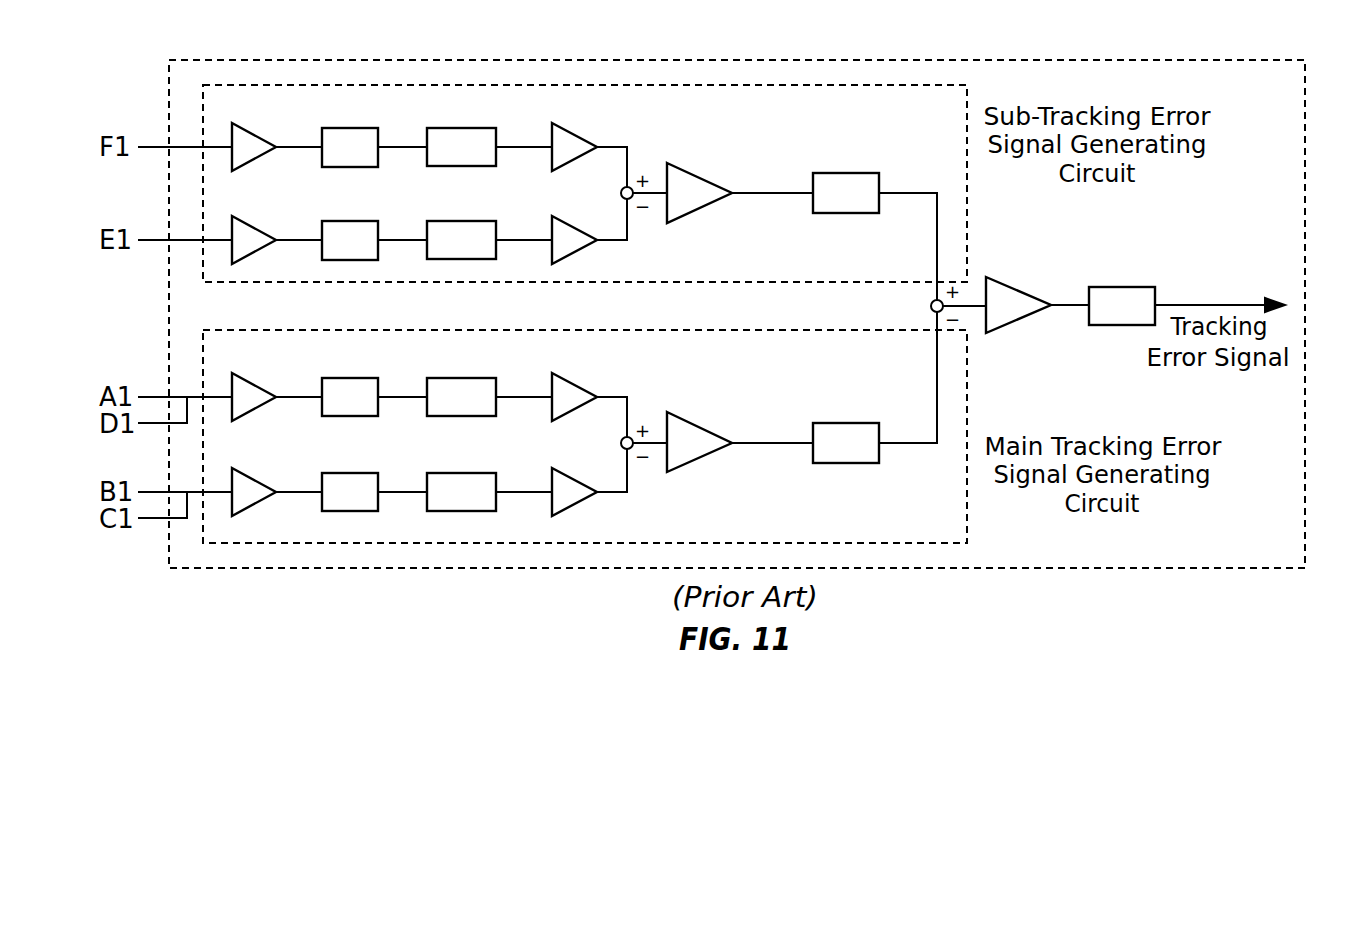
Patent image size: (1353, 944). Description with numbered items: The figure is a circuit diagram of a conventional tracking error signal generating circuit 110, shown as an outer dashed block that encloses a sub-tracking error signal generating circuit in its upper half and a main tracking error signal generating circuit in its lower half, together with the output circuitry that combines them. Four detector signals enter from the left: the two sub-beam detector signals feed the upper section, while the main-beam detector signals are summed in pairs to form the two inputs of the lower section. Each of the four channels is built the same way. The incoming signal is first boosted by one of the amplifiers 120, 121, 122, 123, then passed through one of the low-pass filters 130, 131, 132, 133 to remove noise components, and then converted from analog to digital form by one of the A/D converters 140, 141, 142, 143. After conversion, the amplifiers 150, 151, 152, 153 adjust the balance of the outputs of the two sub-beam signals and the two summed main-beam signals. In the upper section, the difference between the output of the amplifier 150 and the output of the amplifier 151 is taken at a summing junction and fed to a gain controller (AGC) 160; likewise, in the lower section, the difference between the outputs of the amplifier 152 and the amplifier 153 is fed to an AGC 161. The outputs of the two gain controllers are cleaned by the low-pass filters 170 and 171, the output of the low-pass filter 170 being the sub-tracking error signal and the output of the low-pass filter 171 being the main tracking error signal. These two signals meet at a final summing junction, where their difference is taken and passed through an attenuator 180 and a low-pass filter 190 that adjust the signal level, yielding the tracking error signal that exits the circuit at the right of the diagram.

The tracking error signal generating circuit 110 is at (865, 60).
The amplifier 120 is at (257, 131).
The amplifier 121 is at (257, 224).
The amplifier 122 is at (257, 381).
The amplifier 123 is at (257, 476).
The low-pass filter 130 is at (355, 128).
The low-pass filter 131 is at (355, 221).
The low-pass filter 132 is at (355, 378).
The low-pass filter 133 is at (355, 473).
The A/D converter 140 is at (462, 128).
The A/D converter 141 is at (462, 221).
The A/D converter 142 is at (462, 378).
The A/D converter 143 is at (462, 473).
The amplifier 150 is at (577, 133).
The amplifier 151 is at (577, 255).
The amplifier 152 is at (577, 383).
The amplifier 153 is at (577, 505).
The gain controller (AGC) 160 is at (700, 178).
The gain controller (AGC) 161 is at (693, 427).
The low-pass filter 170 is at (847, 173).
The low-pass filter 171 is at (847, 423).
The attenuator 180 is at (1006, 284).
The low-pass filter 190 is at (1122, 287).